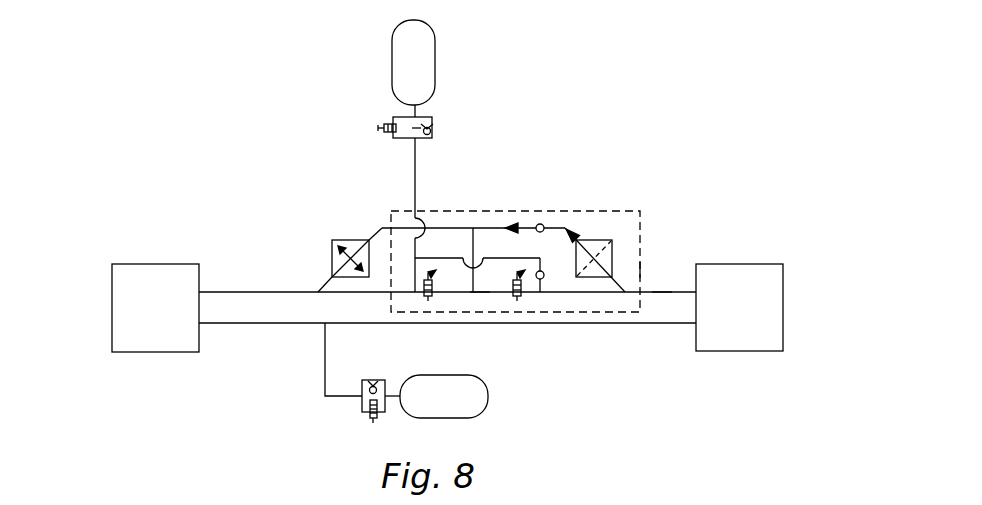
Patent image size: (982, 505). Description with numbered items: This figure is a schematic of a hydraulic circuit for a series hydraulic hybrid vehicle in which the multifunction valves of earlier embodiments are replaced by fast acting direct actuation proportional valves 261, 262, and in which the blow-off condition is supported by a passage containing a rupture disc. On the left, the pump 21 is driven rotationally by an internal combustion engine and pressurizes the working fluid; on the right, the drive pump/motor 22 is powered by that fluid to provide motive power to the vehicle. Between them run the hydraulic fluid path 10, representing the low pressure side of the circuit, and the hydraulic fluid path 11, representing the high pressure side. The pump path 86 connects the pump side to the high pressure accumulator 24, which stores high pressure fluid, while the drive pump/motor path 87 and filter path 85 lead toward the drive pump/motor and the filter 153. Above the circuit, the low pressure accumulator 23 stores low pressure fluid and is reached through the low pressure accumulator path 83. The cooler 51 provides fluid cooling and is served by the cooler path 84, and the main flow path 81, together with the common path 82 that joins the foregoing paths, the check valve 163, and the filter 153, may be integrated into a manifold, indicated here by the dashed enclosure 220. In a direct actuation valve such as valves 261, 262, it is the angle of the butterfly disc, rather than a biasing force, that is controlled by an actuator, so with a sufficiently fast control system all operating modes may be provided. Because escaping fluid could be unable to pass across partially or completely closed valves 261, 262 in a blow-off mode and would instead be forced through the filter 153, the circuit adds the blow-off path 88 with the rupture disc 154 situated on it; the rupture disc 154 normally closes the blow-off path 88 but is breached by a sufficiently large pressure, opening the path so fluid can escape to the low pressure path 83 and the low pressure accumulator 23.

The hydraulic fluid path 10 is at (253, 292).
The hydraulic fluid path 11 is at (253, 323).
The pump 21 is at (112, 308).
The drive pump/motor 22 is at (783, 295).
The low pressure accumulator 23 is at (392, 42).
The high pressure accumulator 24 is at (488, 390).
The cooler 51 is at (343, 240).
The main flow path 81 is at (480, 292).
The common path 82 is at (473, 248).
The low pressure accumulator path 83 is at (418, 178).
The cooler path 84 is at (447, 228).
The filter path 85 is at (640, 270).
The pump path 86 is at (418, 293).
The drive pump/motor path 87 is at (662, 292).
The blow-off path 88 is at (503, 260).
The filter 153 is at (613, 260).
The rupture disc 154 is at (542, 232).
The check valve 163 is at (541, 280).
The valve block 220 is at (570, 211).
The fast acting direct actuation proportional valve 261 is at (518, 296).
The fast acting direct actuation proportional valve 262 is at (433, 292).